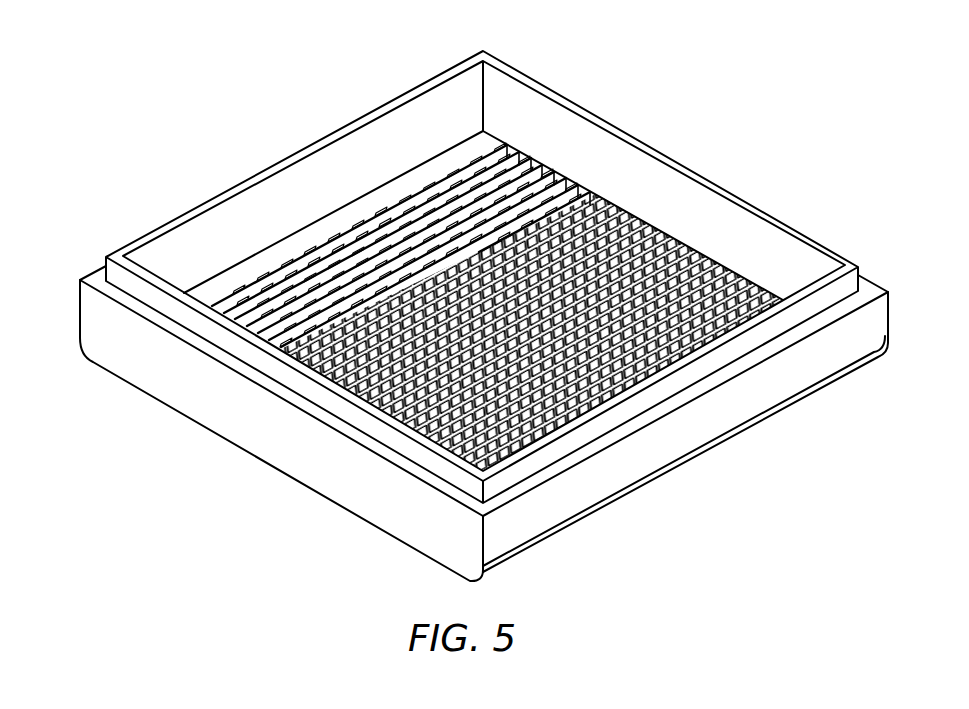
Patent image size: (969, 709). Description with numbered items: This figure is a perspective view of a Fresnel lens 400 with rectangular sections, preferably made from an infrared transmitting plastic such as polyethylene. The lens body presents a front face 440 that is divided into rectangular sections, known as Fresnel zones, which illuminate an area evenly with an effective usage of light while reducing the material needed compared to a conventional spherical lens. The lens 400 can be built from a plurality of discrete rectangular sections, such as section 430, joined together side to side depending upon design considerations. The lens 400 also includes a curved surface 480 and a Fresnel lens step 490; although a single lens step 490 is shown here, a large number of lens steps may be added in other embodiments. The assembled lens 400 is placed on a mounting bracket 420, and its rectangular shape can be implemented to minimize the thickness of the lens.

The Fresnel lens 400 is at (452, 297).
The mounting bracket 420 is at (452, 423).
The section 430 is at (193, 318).
The front face 440 is at (712, 230).
The curved surface 480 is at (78, 356).
The Fresnel lens step 490 is at (410, 467).